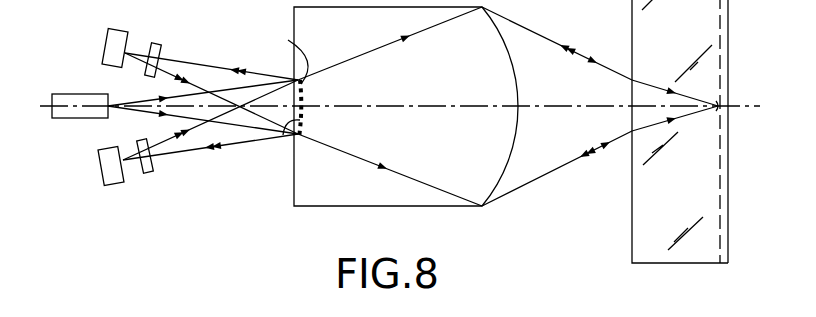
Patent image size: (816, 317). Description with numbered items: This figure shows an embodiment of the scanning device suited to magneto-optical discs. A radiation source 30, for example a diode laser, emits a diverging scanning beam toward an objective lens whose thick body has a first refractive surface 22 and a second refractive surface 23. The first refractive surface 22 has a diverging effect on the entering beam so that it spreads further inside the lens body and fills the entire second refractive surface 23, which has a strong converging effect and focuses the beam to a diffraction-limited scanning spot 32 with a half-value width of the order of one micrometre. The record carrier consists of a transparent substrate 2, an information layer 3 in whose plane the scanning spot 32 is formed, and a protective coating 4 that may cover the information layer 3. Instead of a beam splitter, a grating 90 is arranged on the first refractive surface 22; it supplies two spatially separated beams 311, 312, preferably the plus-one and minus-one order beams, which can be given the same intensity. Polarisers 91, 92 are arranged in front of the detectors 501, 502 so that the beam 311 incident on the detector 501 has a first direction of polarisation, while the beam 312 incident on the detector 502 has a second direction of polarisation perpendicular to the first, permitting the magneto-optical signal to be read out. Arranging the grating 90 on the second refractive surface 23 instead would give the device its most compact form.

The transparent substrate 2 is at (651, 247).
The information layer 3 is at (706, 250).
The protective coating 4 is at (722, 248).
The first refractive surface 22 is at (296, 50).
The second refractive surface 23 is at (500, 181).
The radiation source 30 is at (80, 119).
The scanning spot 32 is at (720, 100).
The detector 501 is at (100, 163).
The detector 502 is at (105, 46).
The polariser 91 is at (144, 175).
The polariser 92 is at (152, 42).
The first separated beam 311 is at (175, 143).
The second separated beam 312 is at (185, 68).
The grating 90 is at (285, 138).